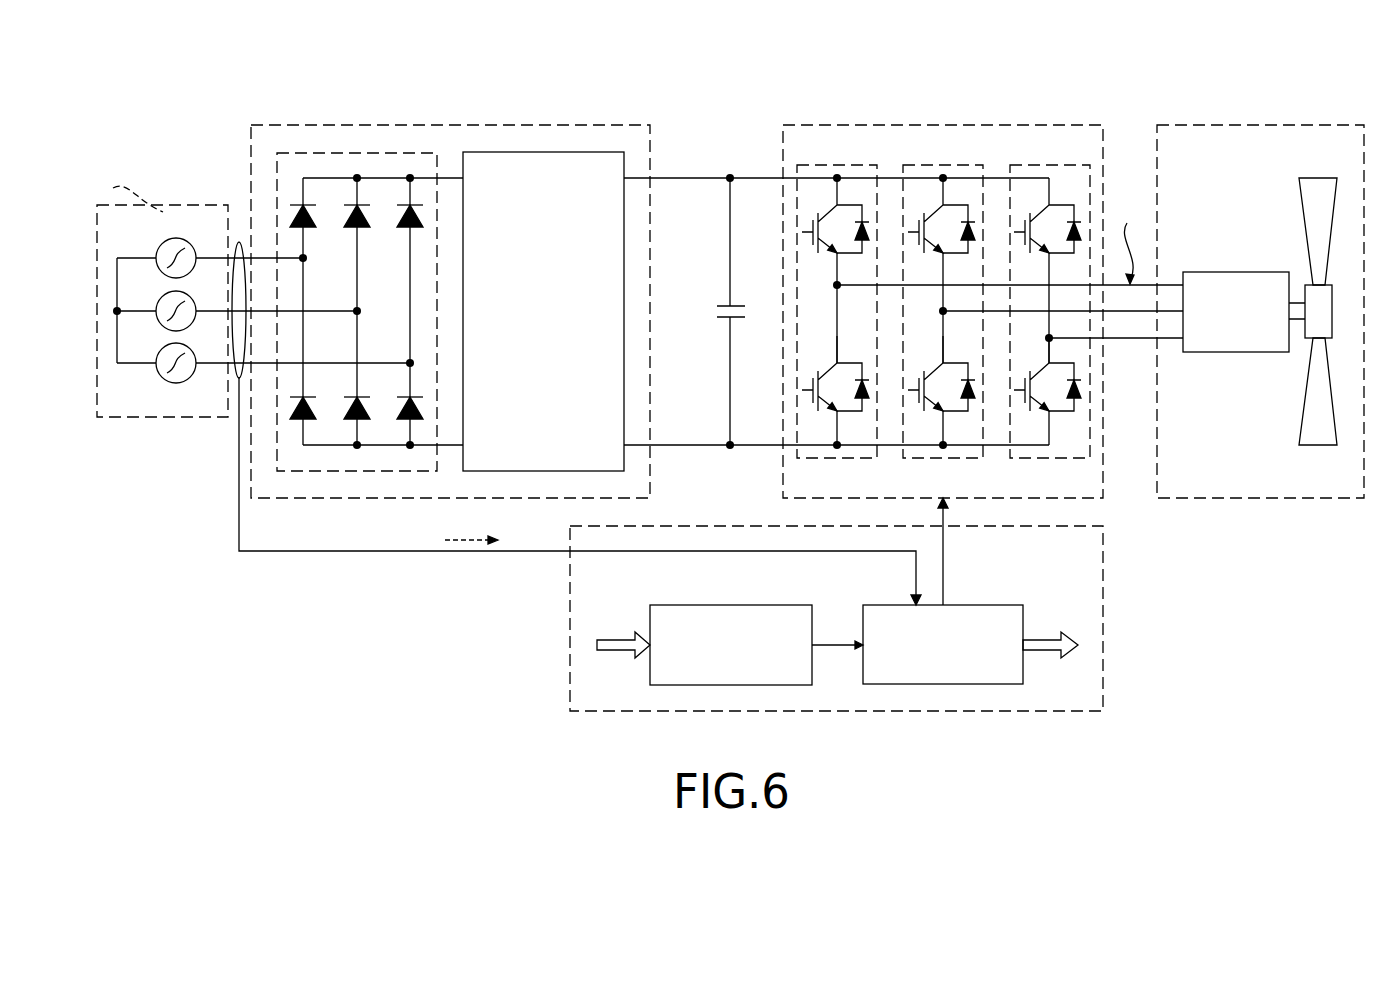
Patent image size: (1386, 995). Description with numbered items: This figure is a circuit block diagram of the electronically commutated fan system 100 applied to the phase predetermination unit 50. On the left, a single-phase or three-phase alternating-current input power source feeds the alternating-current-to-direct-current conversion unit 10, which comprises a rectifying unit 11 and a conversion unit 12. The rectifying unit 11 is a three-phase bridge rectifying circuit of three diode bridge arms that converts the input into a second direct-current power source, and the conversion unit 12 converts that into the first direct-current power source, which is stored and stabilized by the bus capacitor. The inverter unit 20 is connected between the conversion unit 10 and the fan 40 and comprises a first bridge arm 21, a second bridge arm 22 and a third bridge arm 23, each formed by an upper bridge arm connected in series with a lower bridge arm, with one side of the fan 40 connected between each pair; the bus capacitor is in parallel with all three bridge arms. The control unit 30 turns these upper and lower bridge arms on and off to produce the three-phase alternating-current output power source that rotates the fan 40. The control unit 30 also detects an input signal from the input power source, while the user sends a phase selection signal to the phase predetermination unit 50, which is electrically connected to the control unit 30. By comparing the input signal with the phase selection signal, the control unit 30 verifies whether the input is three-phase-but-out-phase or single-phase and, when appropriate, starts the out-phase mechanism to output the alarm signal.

The electronically commutated fan system 100 is at (712, 44).
The alternating-current-to-direct-current conversion unit 10 is at (463, 130).
The rectifying unit 11 is at (357, 155).
The conversion unit 12 is at (543, 157).
The inverter unit 20 is at (943, 128).
The first bridge arm 21 is at (837, 170).
The second bridge arm 22 is at (943, 170).
The third bridge arm 23 is at (1049, 170).
The control unit 30 is at (970, 610).
The fan 40 is at (1262, 128).
The phase predetermination unit 50 is at (730, 612).